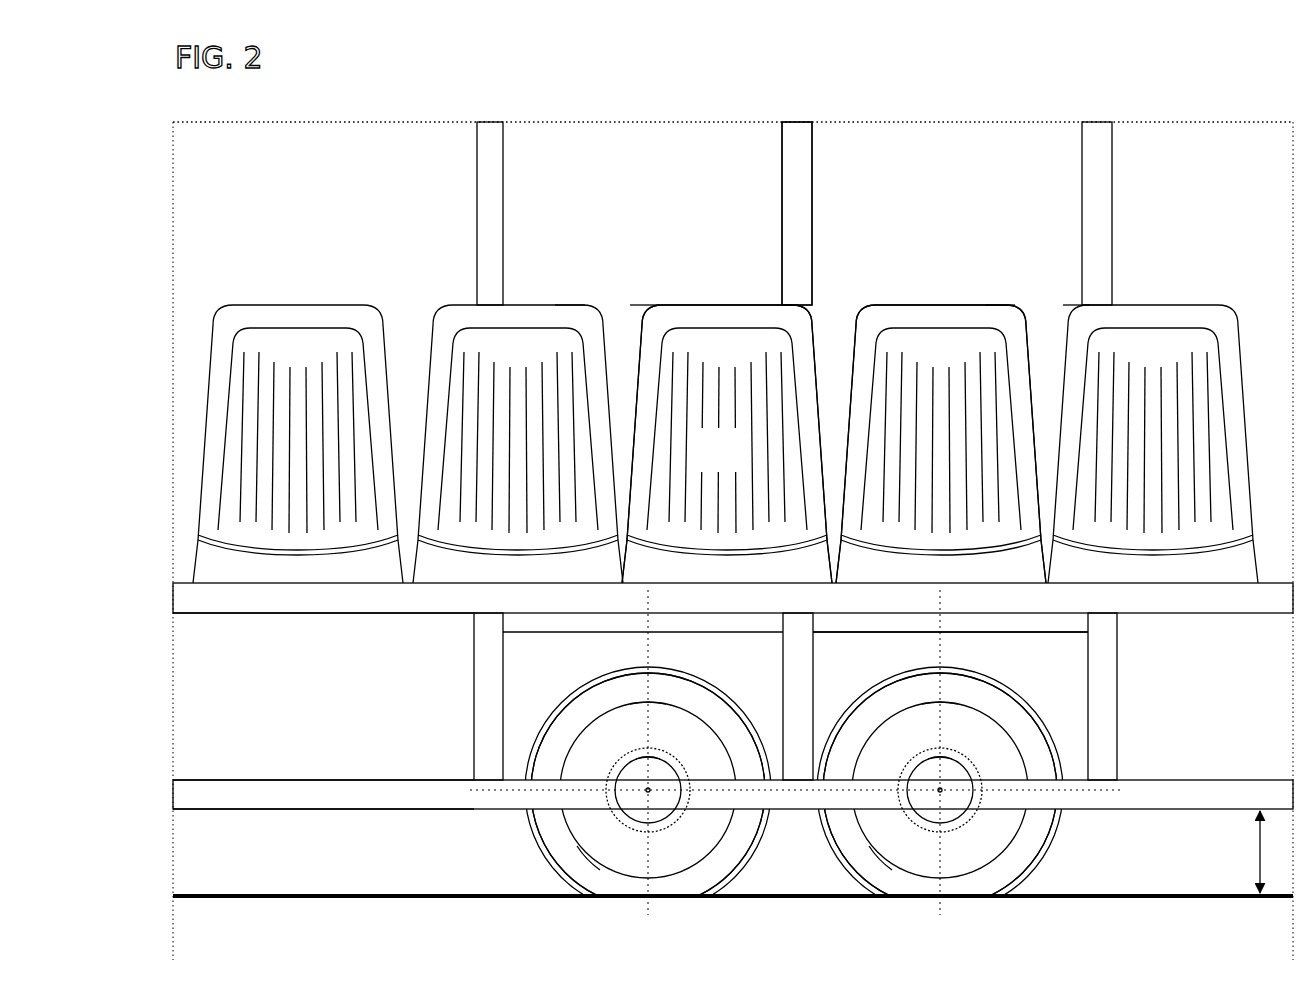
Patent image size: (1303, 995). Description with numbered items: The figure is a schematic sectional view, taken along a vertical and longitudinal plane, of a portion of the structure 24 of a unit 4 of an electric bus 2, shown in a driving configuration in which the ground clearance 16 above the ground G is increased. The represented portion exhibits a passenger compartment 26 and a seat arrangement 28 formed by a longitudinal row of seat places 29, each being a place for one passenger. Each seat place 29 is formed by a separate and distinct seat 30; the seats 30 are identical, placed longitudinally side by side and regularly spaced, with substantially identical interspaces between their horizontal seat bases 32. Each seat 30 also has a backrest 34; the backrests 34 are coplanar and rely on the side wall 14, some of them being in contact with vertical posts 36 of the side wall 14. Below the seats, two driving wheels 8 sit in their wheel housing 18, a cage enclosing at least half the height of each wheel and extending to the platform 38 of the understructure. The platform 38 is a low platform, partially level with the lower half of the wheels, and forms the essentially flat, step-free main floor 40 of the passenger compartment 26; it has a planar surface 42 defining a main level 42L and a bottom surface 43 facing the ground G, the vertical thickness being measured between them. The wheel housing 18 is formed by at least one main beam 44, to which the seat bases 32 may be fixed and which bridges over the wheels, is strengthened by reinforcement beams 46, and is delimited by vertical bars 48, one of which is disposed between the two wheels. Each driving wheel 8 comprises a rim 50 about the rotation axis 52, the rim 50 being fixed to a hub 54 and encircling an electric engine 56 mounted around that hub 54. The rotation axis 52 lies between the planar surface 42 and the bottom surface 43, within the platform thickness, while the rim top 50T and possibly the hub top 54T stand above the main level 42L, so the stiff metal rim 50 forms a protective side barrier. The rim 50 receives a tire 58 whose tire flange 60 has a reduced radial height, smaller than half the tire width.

The electric bus 2 is at (511, 96).
The unit 4 is at (600, 96).
The structure 24 is at (682, 96).
The passenger compartment 26 is at (783, 96).
The seat arrangement 28 is at (883, 96).
The side wall 14 is at (838, 194).
The vertical posts 36 is at (487, 178).
The seat 30 is at (283, 283).
The backrest 34 is at (457, 337).
The seat base 32 is at (207, 576).
The seat place 29 is at (567, 295).
The main beam 44 is at (1232, 594).
The vertical bars 48 is at (803, 635).
The reinforcement beam 46 is at (535, 630).
The wheel housing 18 is at (882, 665).
The main floor 40 is at (283, 720).
The planar surface 42 is at (343, 780).
The main level 42L is at (215, 780).
The bottom surface 43 is at (218, 810).
The platform 38 is at (345, 810).
The driving wheel 8 is at (785, 797).
The tire 58 is at (562, 880).
The tire flange 60 is at (615, 700).
The rim 50 is at (677, 757).
The rim top 50T is at (651, 701).
The electric engine 56 is at (612, 858).
The hub 54 is at (641, 829).
The hub top 54T is at (646, 766).
The rotation axis 52 is at (653, 796).
The ground clearance 16 is at (1244, 852).
The ground G is at (1200, 898).